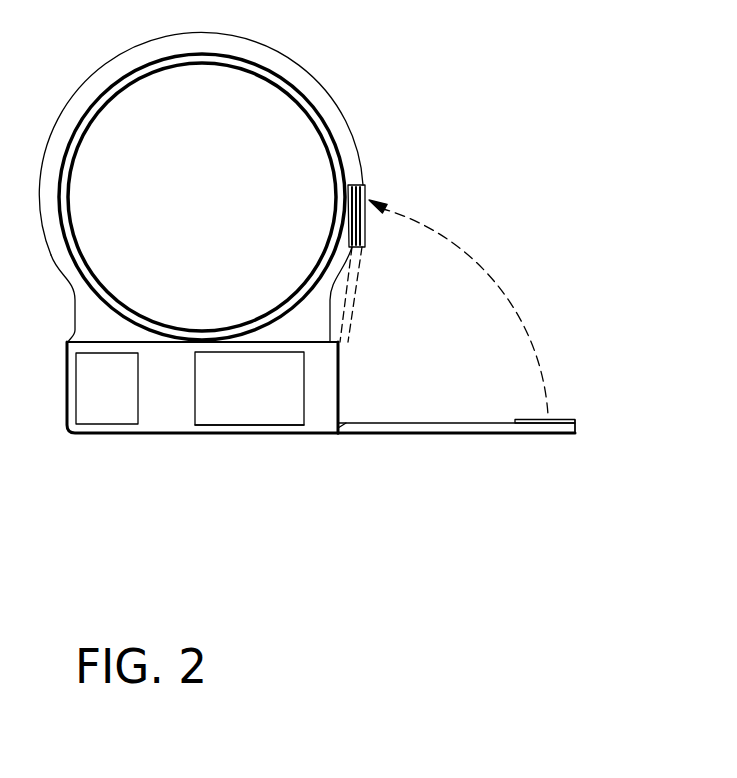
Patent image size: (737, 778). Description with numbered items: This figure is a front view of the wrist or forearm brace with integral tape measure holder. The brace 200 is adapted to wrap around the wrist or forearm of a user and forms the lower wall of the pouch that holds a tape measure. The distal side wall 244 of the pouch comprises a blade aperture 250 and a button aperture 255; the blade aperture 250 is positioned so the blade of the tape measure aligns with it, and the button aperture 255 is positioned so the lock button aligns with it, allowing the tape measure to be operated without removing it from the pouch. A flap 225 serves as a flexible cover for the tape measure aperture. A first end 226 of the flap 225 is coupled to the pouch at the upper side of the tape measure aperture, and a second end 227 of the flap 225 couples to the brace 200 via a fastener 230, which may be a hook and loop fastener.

The brace 200 is at (115, 310).
The distal side wall 244 is at (240, 363).
The button aperture 255 is at (217, 425).
The blade aperture 250 is at (115, 425).
The flap 225 is at (447, 433).
The first end 226 is at (346, 422).
The second end 227 is at (578, 428).
The fastener 230 is at (365, 187).